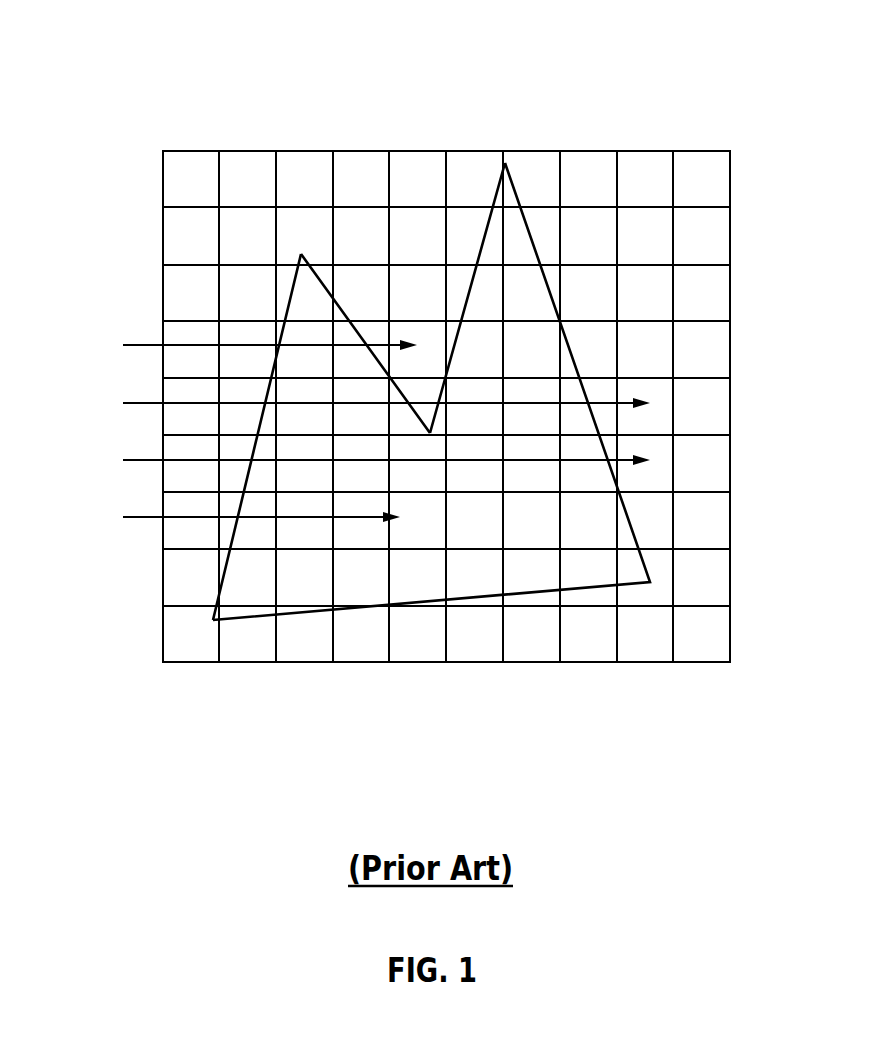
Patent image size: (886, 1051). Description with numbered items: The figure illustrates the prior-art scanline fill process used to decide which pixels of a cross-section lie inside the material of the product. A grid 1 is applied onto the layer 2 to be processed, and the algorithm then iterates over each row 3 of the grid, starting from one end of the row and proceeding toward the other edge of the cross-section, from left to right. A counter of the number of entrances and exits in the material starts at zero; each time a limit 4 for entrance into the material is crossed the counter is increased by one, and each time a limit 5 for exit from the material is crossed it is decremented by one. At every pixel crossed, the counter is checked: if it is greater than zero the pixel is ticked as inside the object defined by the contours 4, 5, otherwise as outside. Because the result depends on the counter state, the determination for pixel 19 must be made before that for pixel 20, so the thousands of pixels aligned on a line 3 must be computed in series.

The grid 1 is at (702, 150).
The layer 2 is at (214, 727).
The row 3 is at (330, 403).
The limit for entrance into the material 4 is at (290, 298).
The limit for exit from the material 5 is at (345, 310).
The pixel 19 is at (530, 413).
The pixel 20 is at (662, 392).